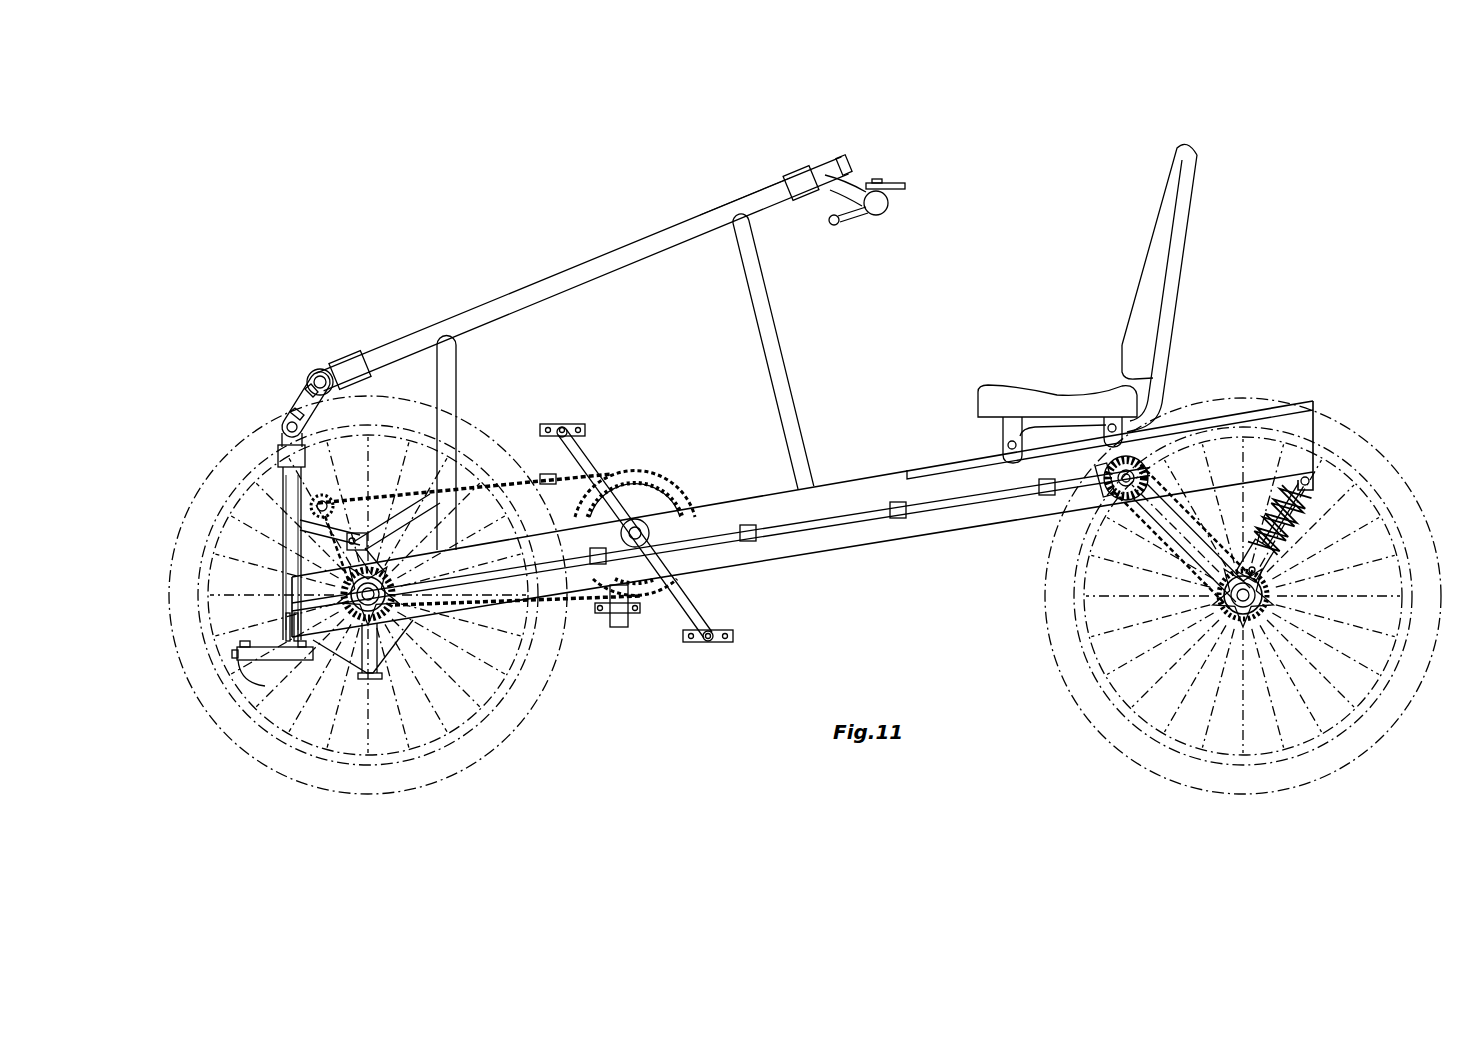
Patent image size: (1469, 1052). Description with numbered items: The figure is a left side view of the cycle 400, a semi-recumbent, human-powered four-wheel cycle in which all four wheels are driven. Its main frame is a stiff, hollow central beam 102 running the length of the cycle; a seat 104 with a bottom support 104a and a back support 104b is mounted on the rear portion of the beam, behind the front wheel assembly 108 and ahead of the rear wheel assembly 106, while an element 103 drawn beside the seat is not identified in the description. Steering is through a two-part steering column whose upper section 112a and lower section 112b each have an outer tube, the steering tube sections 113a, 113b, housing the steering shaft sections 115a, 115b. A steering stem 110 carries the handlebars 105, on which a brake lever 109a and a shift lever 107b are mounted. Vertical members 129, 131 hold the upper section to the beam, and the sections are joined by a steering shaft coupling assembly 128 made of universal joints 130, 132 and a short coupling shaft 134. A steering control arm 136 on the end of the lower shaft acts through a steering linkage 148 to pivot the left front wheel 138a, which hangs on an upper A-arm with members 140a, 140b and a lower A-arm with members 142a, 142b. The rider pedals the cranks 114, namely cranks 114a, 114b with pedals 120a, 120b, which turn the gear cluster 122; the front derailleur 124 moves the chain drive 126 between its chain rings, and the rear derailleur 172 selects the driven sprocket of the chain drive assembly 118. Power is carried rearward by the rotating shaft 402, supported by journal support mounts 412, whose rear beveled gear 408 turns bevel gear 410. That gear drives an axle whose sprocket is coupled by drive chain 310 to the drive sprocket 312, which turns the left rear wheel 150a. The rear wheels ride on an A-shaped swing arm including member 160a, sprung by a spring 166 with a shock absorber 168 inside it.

The cycle 400 is at (652, 79).
The central beam 102 is at (920, 545).
The rotating shaft 402 is at (828, 535).
The journal support mounts 412 is at (898, 502).
The seat rail 103 is at (948, 463).
The seat 104 is at (1076, 298).
The bottom support 104a is at (1060, 386).
The back support 104b is at (1160, 250).
The handlebars 105 is at (887, 205).
The lever for shifting gears 107b is at (898, 180).
The lever for controlling braking 109a is at (855, 217).
The steering stem 110 is at (838, 158).
The upper section of steering column 112a is at (500, 262).
The lower section of steering column 112b is at (283, 502).
The upper steering tube section 113a is at (650, 237).
The lower steering tube section 113b is at (283, 480).
The cranks 114 is at (638, 436).
The crank 114a is at (603, 487).
The crank 114b is at (705, 630).
The upper section of steering shaft 115a is at (320, 368).
The lower section of steering shaft 115b is at (282, 430).
The chain drive assembly 118 is at (582, 630).
The pedal 120a is at (562, 422).
The pedal 120b is at (718, 645).
The gear cluster 122 is at (702, 587).
The front derailleur 124 is at (620, 627).
The chain drive 126 is at (548, 480).
The steering shaft coupling assembly 128 is at (202, 318).
The vertical member 129 is at (778, 332).
The universal joint 130 is at (312, 373).
The vertical member 131 is at (458, 385).
The universal joint 132 is at (292, 413).
The coupling shaft 134 is at (300, 405).
The steering control arm 136 is at (255, 678).
The left front wheel 138a is at (285, 778).
The upper A-arm member 140a is at (300, 525).
The upper A-arm member 140b is at (410, 495).
The lower A-arm member 142a is at (282, 734).
The lower A-arm member 142b is at (403, 640).
The steering linkage 148 is at (240, 652).
The front wheel assembly 108 is at (215, 288).
The rear wheel assembly 106 is at (1358, 426).
The left rear wheel 150a is at (1085, 712).
The swing arm member 160a is at (1096, 552).
The spring 166 is at (1312, 482).
The shock absorber 168 is at (1290, 520).
The rear derailleur 172 is at (352, 480).
The drive chain 310 is at (1197, 585).
The drive sprocket 312 is at (1255, 612).
The beveled gear 408 is at (1138, 503).
The bevel gear 410 is at (1145, 470).